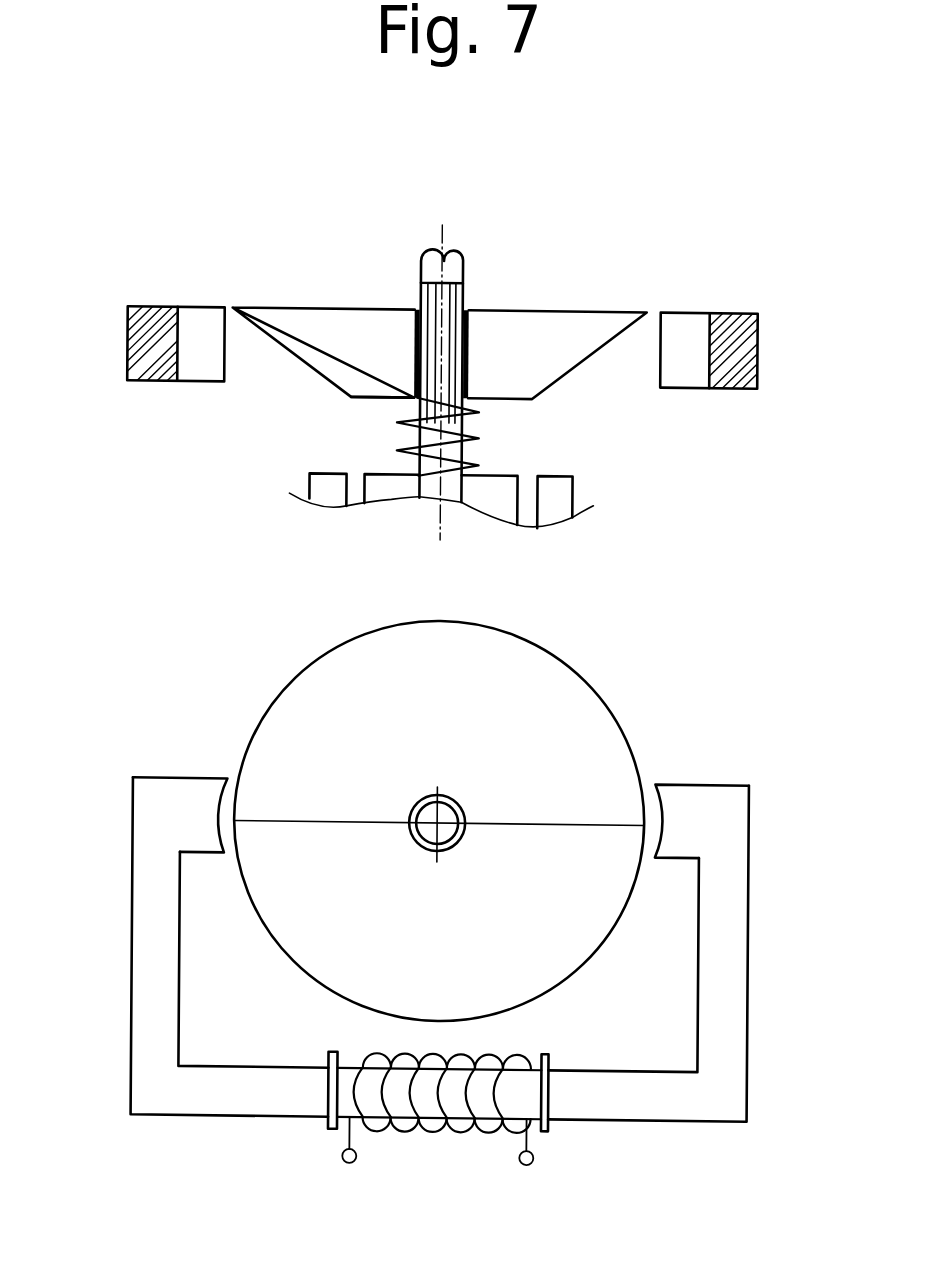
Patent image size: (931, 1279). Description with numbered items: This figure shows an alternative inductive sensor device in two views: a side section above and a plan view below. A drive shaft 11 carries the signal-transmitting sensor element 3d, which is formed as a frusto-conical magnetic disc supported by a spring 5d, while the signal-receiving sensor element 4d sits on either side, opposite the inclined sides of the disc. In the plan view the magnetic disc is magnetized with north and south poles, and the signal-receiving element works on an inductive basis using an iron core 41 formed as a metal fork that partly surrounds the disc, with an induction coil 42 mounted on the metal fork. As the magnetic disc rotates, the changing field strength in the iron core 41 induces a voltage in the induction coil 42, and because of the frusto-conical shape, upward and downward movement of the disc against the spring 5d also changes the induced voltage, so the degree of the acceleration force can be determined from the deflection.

The drive shaft 11 is at (417, 271).
The signal-transmitting sensor element 3d is at (553, 333).
The signal-receiving sensor element 4d is at (173, 382).
The spring 5d is at (478, 438).
The iron core 41 is at (160, 1091).
The induction coil 42 is at (433, 1132).